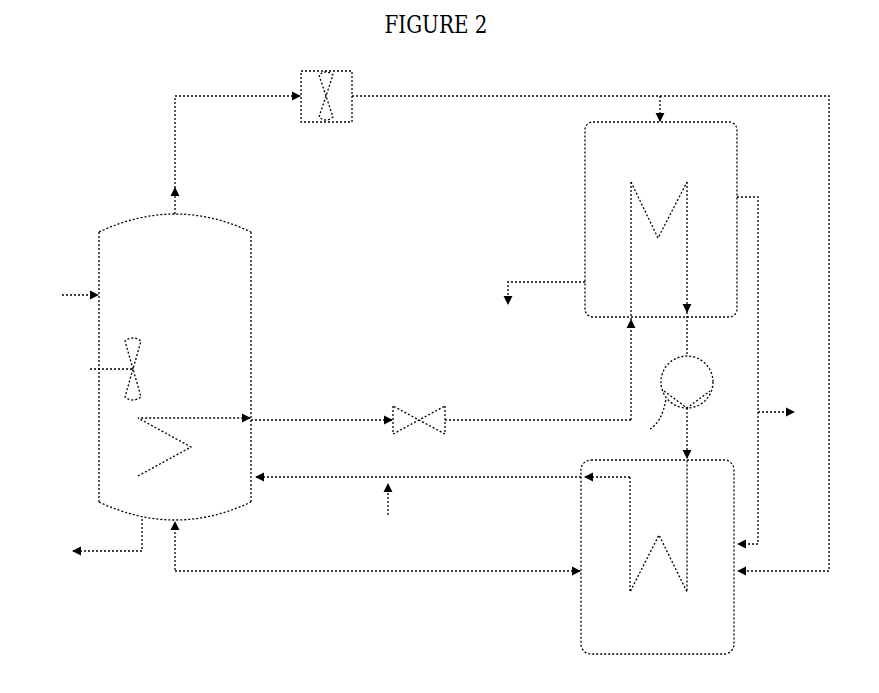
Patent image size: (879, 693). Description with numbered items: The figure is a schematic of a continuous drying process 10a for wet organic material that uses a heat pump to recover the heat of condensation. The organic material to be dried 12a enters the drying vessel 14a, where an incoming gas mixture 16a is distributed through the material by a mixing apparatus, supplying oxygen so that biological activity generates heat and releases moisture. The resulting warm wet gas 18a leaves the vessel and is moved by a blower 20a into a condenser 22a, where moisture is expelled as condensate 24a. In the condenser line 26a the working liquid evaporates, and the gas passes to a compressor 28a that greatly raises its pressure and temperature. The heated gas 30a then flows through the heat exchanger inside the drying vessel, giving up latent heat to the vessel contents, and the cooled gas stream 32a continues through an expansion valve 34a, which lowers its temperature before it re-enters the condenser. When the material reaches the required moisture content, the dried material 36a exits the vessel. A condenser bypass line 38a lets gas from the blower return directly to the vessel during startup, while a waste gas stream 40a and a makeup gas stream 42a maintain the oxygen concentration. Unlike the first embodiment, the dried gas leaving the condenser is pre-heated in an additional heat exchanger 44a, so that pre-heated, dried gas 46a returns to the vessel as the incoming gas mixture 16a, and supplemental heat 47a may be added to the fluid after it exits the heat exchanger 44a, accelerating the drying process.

The process 10a is at (68, 143).
The organic material to be dried 12a is at (69, 294).
The drying vessel 14a is at (134, 367).
The gas mixture 16a is at (377, 546).
The warm wet gas 18a is at (237, 155).
The blower 20a is at (340, 109).
The condenser 22a is at (661, 219).
The condensate 24a is at (546, 284).
The condenser line 26a is at (674, 301).
The compressor 28a is at (644, 407).
The heated gas 30a is at (443, 485).
The cooled gas stream 32a is at (194, 438).
The expansion valve 34a is at (441, 407).
The dried material 36a is at (105, 557).
The condenser bypass line 38a is at (826, 158).
The waste gas stream 40a is at (777, 361).
The makeup gas stream 42a is at (783, 591).
The additional heat exchanger 44a is at (657, 557).
The pre-heated, dried gas 46a is at (549, 567).
The supplemental heat 47a is at (451, 502).